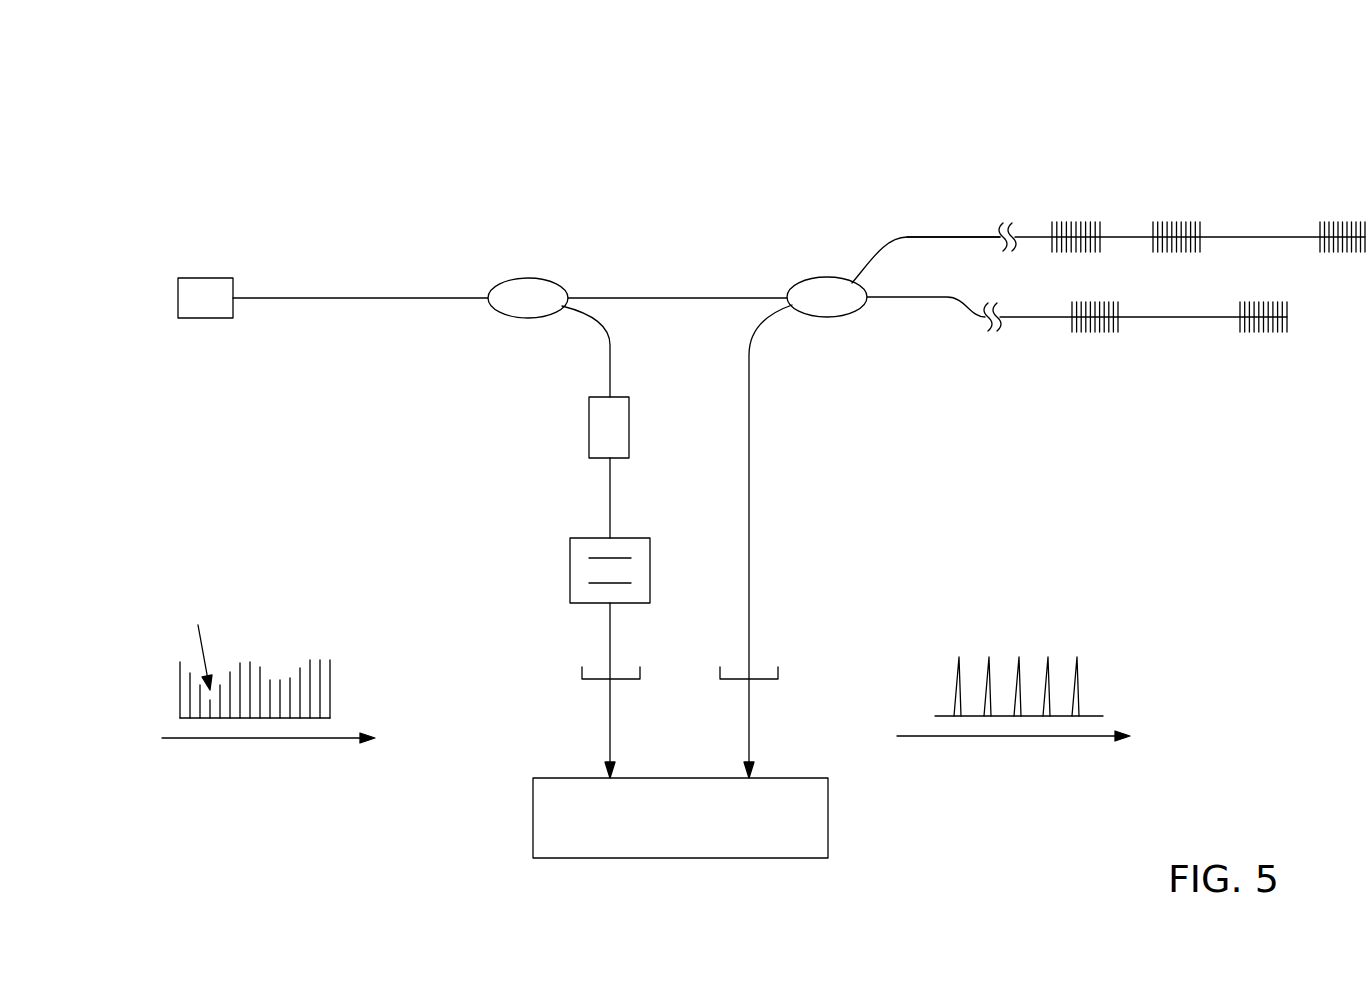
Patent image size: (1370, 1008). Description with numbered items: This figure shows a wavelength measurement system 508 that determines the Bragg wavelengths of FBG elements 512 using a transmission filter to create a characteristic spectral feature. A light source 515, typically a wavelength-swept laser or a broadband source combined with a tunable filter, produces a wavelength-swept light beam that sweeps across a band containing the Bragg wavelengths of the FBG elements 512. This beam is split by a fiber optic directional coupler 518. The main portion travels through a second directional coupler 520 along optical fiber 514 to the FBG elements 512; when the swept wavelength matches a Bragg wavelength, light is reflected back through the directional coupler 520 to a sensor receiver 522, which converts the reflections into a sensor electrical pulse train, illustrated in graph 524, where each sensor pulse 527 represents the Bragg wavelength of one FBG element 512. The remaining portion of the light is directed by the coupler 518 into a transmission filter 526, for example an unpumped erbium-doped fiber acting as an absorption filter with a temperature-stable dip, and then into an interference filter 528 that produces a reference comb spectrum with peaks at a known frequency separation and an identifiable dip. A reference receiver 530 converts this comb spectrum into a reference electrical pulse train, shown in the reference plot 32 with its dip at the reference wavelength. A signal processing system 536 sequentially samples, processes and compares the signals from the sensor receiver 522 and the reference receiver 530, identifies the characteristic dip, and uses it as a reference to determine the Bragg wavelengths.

The wavelength measurement system 508 is at (580, 117).
The FBG elements 512 is at (1153, 230).
The optical fiber 514 is at (930, 237).
The light source 515 is at (205, 278).
The fiber optic directional coupler 518 is at (528, 278).
The second directional coupler 520 is at (797, 278).
The sensor receiver 522 is at (778, 672).
The graph 524 is at (1055, 694).
The transmission filter 526 is at (589, 428).
The sensor pulse 527 is at (1080, 607).
The interference filter 528 is at (570, 570).
The reference receiver 530 is at (582, 672).
The signal processing system 536 is at (533, 818).
The reference wavelength signal 32 is at (303, 648).